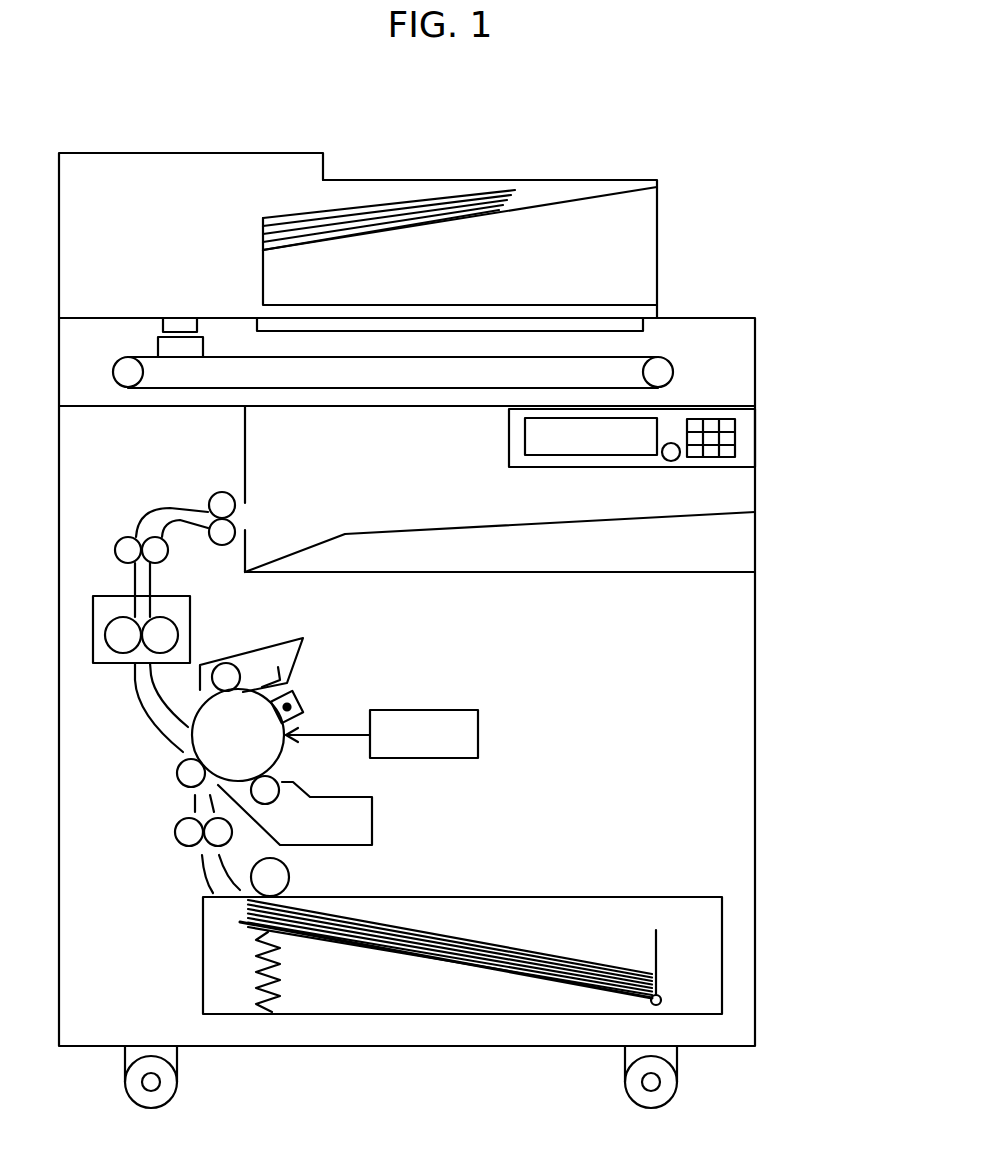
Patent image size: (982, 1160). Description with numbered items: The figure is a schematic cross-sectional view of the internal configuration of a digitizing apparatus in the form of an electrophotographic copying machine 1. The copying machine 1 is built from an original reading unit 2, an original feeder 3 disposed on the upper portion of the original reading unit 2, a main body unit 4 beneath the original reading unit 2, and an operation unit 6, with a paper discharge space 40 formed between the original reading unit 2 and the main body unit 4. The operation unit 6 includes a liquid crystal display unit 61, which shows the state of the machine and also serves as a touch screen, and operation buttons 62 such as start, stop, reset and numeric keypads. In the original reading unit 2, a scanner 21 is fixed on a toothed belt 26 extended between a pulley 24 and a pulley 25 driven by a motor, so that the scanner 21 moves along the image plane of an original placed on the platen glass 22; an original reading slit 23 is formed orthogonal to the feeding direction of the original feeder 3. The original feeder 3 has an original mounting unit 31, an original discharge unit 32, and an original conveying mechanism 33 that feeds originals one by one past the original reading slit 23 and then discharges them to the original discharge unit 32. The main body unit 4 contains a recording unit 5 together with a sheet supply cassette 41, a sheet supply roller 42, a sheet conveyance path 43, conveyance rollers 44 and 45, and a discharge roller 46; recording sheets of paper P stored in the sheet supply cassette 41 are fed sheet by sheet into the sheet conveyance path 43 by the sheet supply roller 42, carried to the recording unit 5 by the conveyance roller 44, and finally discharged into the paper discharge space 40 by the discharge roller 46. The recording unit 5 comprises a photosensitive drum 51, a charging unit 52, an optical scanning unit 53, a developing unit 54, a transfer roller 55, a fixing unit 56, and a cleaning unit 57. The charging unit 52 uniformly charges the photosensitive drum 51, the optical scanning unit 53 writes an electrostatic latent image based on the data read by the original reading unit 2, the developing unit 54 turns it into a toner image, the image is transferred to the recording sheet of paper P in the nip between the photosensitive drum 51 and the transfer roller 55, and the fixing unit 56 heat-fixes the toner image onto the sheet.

The copying machine 1 is at (723, 149).
The original reading unit 2 is at (773, 357).
The original feeder 3 is at (690, 225).
The main body unit 4 is at (773, 632).
The recording unit 5 is at (405, 690).
The operation unit 6 is at (757, 436).
The scanner 21 is at (158, 347).
The platen glass 22 is at (643, 327).
The original reading slit 23 is at (180, 325).
The pulley 24 is at (673, 372).
The pulley 25 is at (113, 372).
The toothed belt 26 is at (572, 360).
The original mounting unit 31 is at (520, 205).
The original discharge unit 32 is at (505, 303).
The original conveying mechanism 33 is at (190, 197).
The paper discharge space 40 is at (430, 483).
The sheet supply cassette 41 is at (600, 897).
The sheet supply roller 42 is at (290, 872).
The sheet conveyance path 43 is at (165, 712).
The conveyance roller 44 is at (174, 830).
The conveyance roller 45 is at (122, 537).
The discharge roller 46 is at (212, 493).
The photosensitive drum 51 is at (282, 757).
The charging unit 52 is at (302, 693).
The optical scanning unit 53 is at (480, 726).
The developing unit 54 is at (374, 808).
The transfer roller 55 is at (176, 772).
The fixing unit 56 is at (192, 616).
The cleaning unit 57 is at (297, 647).
The liquid crystal display unit 61 is at (600, 445).
The operation buttons 62 is at (700, 448).
The recording sheet of paper P is at (465, 935).